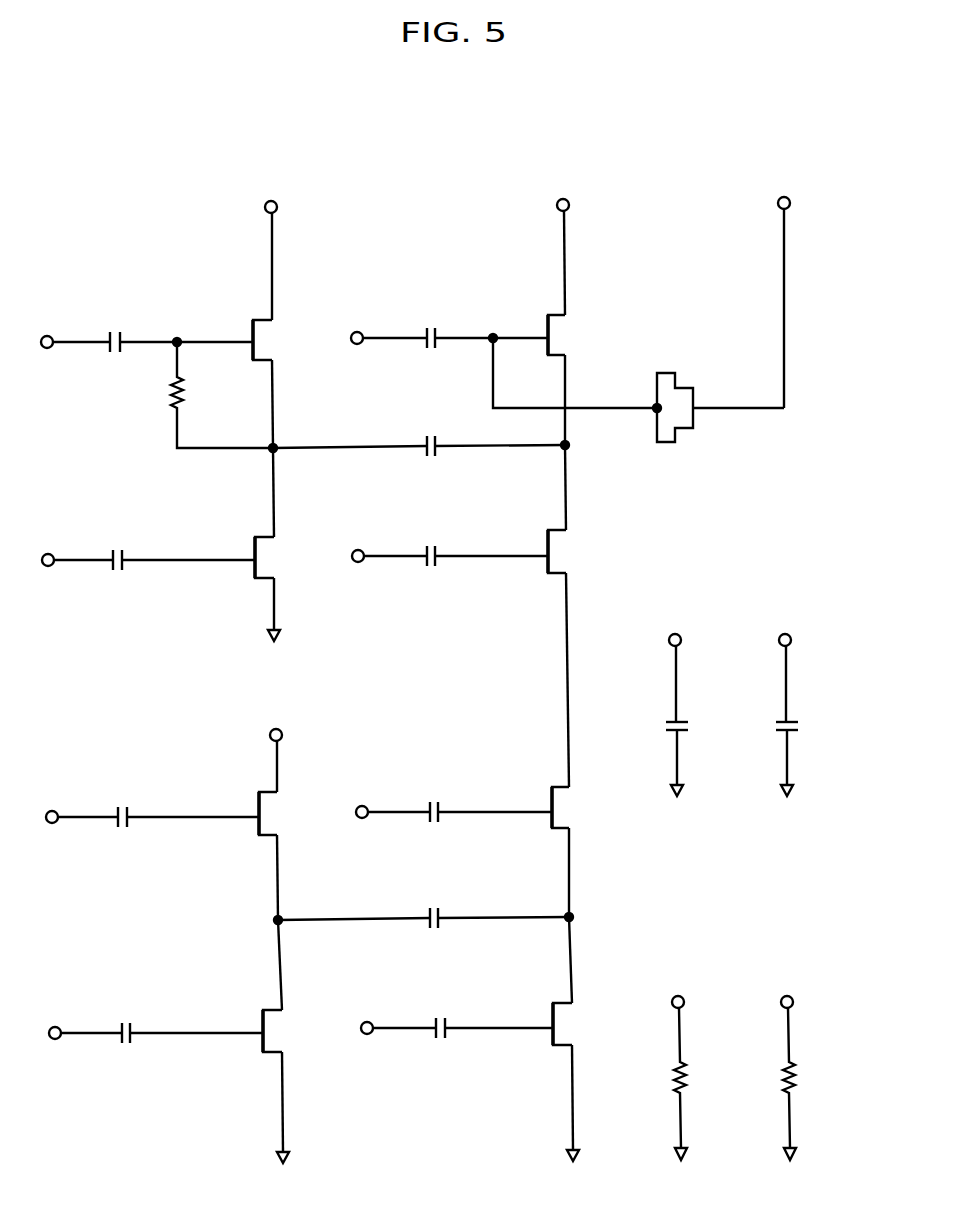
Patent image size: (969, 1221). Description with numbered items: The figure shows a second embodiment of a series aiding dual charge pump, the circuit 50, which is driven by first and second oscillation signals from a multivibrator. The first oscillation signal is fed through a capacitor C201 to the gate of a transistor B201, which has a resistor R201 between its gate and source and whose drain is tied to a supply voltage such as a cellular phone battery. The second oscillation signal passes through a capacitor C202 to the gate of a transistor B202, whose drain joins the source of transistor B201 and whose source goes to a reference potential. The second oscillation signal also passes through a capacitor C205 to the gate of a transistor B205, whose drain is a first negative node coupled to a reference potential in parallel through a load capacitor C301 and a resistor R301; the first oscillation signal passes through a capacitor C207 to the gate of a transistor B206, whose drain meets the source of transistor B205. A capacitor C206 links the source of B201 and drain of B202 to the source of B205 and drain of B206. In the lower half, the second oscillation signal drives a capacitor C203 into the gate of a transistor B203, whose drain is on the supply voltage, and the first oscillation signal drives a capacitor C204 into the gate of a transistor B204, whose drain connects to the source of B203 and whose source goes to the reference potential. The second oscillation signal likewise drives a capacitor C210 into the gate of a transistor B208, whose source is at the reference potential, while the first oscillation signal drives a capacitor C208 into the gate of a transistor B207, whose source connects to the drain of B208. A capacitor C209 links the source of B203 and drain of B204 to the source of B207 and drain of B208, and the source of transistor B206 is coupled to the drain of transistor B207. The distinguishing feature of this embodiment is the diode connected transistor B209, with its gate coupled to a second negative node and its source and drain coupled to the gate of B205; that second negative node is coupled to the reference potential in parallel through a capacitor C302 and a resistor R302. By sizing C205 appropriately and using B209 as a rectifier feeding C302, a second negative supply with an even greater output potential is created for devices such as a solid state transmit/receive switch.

The circuit 50 is at (160, 160).
The transistor B201 is at (257, 324).
The transistor B202 is at (262, 551).
The transistor B203 is at (268, 797).
The transistor B204 is at (270, 1049).
The transistor B205 is at (554, 319).
The transistor B206 is at (560, 509).
The transistor B207 is at (563, 789).
The transistor B208 is at (563, 1049).
The diode connected transistor B209 is at (720, 375).
The capacitor C201 is at (139, 325).
The capacitor C202 is at (141, 545).
The capacitor C203 is at (143, 800).
The capacitor C204 is at (148, 1017).
The capacitor C205 is at (442, 322).
The capacitor C206 is at (419, 430).
The capacitor C207 is at (440, 540).
The capacitor C208 is at (445, 795).
The capacitor C209 is at (423, 904).
The capacitor C210 is at (447, 1012).
The load capacitor C301 is at (695, 710).
The capacitor C302 is at (807, 710).
The resistor R201 is at (222, 395).
The resistor R301 is at (697, 1071).
The resistor R302 is at (810, 1071).